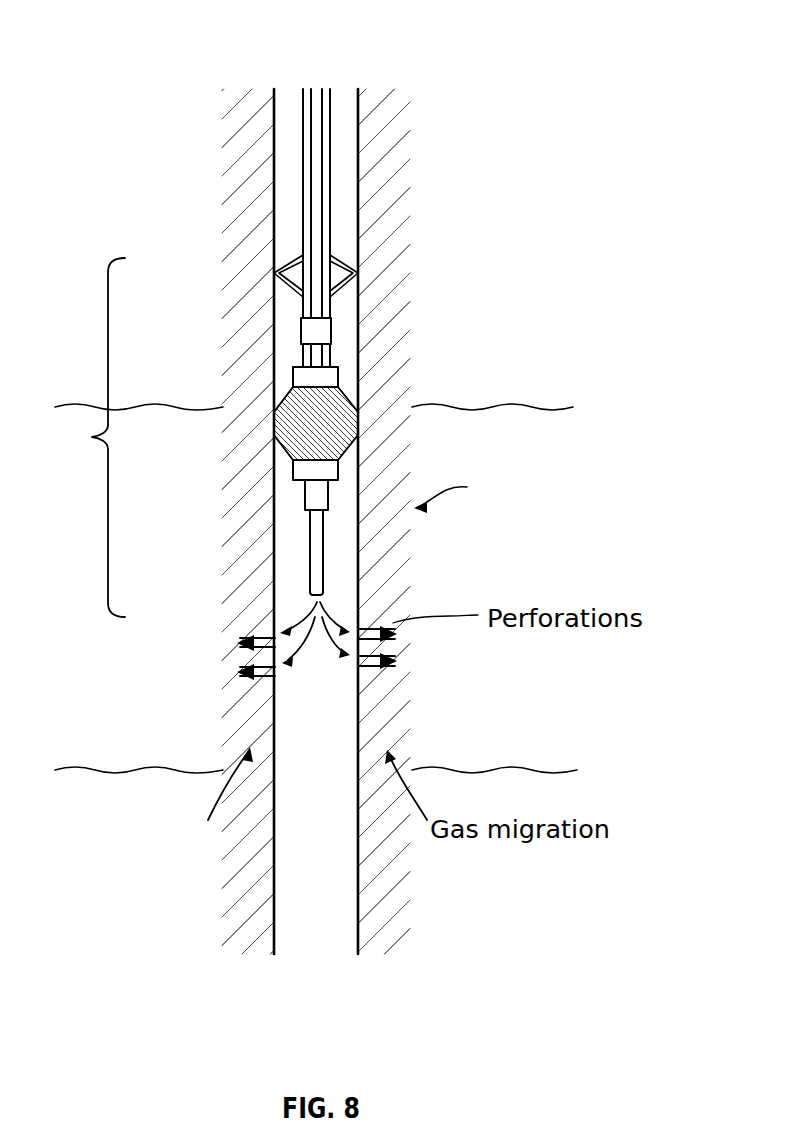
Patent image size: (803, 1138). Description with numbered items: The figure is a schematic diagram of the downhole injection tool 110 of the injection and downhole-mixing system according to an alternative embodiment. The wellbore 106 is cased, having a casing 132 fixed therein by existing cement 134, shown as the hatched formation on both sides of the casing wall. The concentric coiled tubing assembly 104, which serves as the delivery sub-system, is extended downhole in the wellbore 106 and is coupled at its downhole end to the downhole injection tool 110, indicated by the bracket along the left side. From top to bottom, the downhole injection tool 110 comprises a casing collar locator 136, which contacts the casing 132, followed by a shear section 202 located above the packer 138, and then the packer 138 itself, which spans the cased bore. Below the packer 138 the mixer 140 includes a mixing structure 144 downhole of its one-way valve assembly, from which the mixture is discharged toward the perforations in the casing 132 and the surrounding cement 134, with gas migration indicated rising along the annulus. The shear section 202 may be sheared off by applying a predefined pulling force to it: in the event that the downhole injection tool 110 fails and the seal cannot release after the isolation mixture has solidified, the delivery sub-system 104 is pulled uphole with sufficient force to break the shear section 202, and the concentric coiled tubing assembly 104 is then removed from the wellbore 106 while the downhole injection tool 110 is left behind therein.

The concentric coiled tubing assembly 104 is at (303, 177).
The wellbore 106 is at (285, 88).
The downhole injection tool 110 is at (87, 437).
The casing 132 is at (360, 142).
The existing cement 134 is at (385, 193).
The casing collar locator 136 is at (343, 262).
The packer 138 is at (343, 402).
The mixer 140 is at (437, 534).
The mixing structure 144 is at (310, 585).
The shear section 202 is at (331, 332).